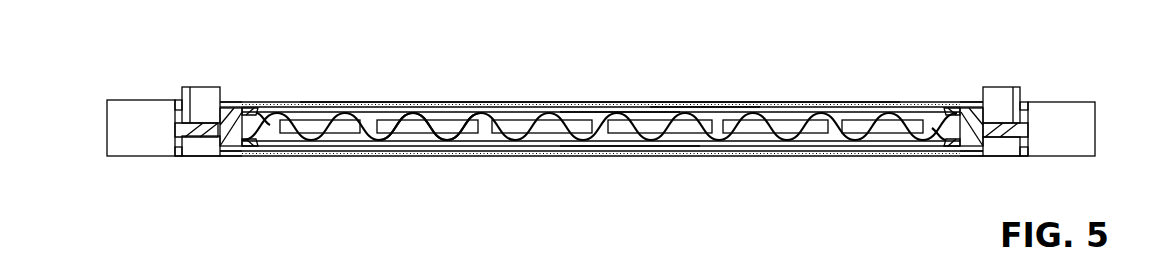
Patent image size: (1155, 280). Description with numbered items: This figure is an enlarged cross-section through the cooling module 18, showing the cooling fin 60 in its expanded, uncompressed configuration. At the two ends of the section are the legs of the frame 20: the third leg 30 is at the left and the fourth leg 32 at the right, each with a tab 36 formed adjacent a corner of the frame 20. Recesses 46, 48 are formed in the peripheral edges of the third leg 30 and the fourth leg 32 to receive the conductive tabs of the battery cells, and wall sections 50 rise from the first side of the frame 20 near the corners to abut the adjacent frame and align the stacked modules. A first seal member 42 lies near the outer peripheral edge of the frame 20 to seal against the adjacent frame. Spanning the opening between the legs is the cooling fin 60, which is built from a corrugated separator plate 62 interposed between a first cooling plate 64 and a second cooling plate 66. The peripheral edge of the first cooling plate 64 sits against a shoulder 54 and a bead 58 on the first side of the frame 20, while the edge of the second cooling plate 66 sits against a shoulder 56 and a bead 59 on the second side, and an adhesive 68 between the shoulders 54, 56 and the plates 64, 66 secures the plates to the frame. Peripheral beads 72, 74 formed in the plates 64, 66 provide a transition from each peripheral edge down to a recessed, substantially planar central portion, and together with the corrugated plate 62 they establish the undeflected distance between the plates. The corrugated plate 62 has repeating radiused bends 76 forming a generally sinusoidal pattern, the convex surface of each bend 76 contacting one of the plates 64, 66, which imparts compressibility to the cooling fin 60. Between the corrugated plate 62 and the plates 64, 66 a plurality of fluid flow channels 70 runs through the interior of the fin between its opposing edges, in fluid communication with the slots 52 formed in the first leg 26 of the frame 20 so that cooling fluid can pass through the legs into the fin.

The cooling module 18 is at (1041, 65).
The frame 20 is at (866, 103).
The first leg 26 is at (703, 108).
The third leg 30 is at (176, 127).
The fourth leg 32 is at (1028, 128).
The tabs 36 is at (143, 100).
The first seal member 42 is at (1007, 157).
The recess 46 is at (178, 100).
The recess 48 is at (178, 157).
The wall sections 50 is at (203, 87).
The slots 52 is at (522, 118).
The shoulder 54 is at (978, 106).
The shoulder 56 is at (978, 151).
The bead 58 is at (958, 106).
The bead 59 is at (958, 153).
The cooling fin 60 is at (762, 105).
The corrugated separator plate 62 is at (647, 112).
The first cooling plate 64 is at (592, 112).
The second cooling plate 66 is at (627, 147).
The adhesive 68 is at (225, 102).
The fluid flow channels 70 is at (482, 120).
The peripheral bead 72 is at (252, 108).
The peripheral bead 74 is at (262, 147).
The radiused bends 76 is at (454, 125).